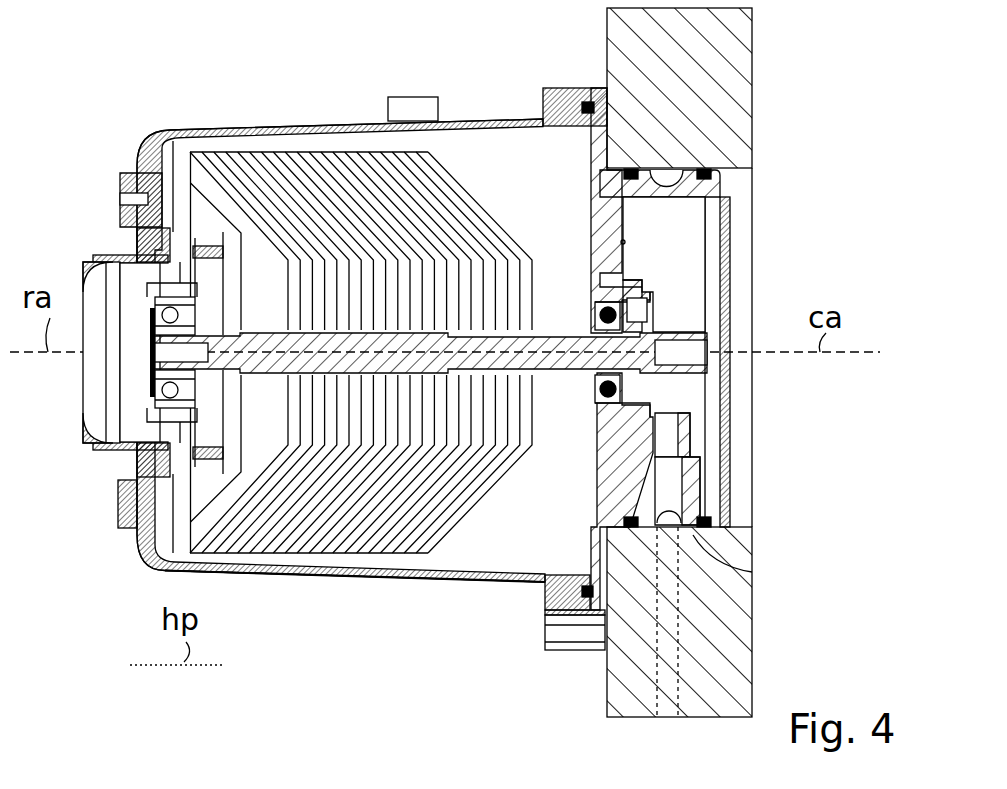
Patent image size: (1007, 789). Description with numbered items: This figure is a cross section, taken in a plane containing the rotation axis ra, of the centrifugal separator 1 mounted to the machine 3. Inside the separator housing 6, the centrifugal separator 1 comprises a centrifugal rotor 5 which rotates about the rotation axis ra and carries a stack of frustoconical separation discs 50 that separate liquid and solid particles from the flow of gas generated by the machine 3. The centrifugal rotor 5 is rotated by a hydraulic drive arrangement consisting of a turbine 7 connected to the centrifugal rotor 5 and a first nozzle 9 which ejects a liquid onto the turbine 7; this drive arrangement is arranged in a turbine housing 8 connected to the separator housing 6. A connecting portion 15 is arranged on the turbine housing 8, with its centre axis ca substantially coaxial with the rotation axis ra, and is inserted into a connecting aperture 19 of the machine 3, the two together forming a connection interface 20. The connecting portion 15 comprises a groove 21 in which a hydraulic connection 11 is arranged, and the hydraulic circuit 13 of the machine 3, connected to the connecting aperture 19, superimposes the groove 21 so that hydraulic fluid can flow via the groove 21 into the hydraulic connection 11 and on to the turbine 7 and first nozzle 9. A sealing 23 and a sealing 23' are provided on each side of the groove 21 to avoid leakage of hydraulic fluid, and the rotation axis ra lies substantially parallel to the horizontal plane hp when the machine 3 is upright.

The centrifugal separator 1 is at (166, 82).
The machine 3 is at (740, 30).
The centrifugal rotor 5 is at (244, 152).
The separator housing 6 is at (358, 579).
The turbine 7 is at (673, 300).
The turbine housing 8 is at (606, 488).
The first nozzle 9 is at (680, 443).
The hydraulic connection 11 is at (669, 500).
The hydraulic circuit 13 is at (664, 623).
The connecting portion 15 is at (752, 572).
The connecting aperture 19 is at (741, 528).
The connection interface 20 is at (666, 125).
The groove 21 is at (670, 185).
The sealing 23 is at (731, 120).
The sealing 23' is at (771, 143).
The frustoconical separation discs 50 is at (352, 178).